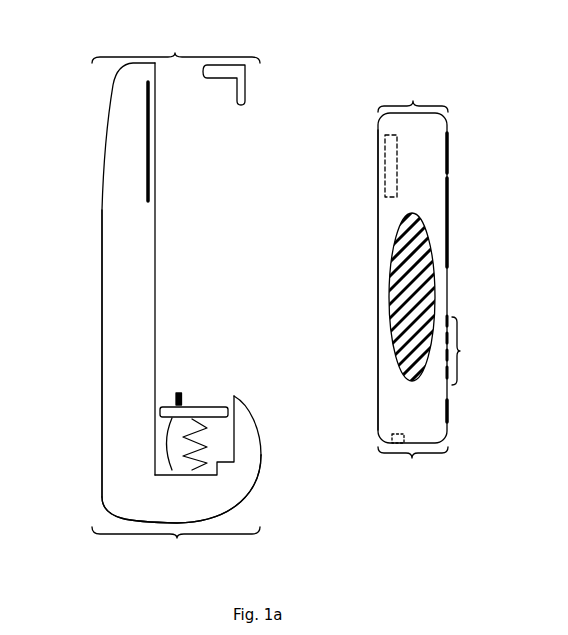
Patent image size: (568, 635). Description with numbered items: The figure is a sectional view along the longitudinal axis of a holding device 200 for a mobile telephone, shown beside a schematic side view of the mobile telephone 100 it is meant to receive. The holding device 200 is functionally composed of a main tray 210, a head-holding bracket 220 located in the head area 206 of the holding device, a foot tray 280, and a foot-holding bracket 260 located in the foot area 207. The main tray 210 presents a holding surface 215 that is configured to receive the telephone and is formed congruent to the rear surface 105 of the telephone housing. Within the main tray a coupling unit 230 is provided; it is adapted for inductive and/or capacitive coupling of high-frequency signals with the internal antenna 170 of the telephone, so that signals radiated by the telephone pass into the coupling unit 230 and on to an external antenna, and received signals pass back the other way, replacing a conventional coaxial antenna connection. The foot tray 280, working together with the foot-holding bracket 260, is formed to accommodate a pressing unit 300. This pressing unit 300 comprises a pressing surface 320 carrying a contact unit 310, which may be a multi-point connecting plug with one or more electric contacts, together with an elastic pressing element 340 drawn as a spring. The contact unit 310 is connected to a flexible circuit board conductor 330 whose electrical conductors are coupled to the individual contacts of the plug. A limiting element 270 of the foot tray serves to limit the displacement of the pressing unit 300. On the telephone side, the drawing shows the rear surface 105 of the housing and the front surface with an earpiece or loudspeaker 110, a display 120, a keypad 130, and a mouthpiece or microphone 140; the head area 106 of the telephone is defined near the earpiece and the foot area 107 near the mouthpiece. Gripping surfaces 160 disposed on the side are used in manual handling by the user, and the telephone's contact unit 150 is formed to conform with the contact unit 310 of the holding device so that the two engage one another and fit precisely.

The mobile telephone 100 is at (462, 100).
The rear surface of the housing 105 is at (376, 279).
The head area of the mobile telephone housing 106 is at (413, 94).
The foot area of the mobile telephone housing 107 is at (412, 463).
The earpiece or loudspeaker 110 is at (455, 152).
The display 120 is at (455, 243).
The keypad 130 is at (466, 353).
The mouthpiece or microphone 140 is at (454, 412).
The contact unit 150 is at (395, 432).
The gripping surface 160 is at (414, 300).
The antenna 170 is at (393, 167).
The holding device 200 is at (85, 88).
The head area of the holding device 206 is at (175, 43).
The foot area of the holding device 207 is at (175, 545).
The main tray 210 is at (118, 292).
The holding surface 215 is at (158, 292).
The head-holding bracket 220 is at (227, 82).
The coupling unit 230 is at (143, 142).
The foot-holding bracket 260 is at (245, 427).
The limiting element 270 is at (223, 468).
The foot tray 280 is at (192, 498).
The pressing unit 300 is at (196, 378).
The contact unit 310 is at (173, 397).
The pressing surface 320 is at (176, 412).
The flexible circuit board conductor 330 is at (164, 430).
The elastic pressing element 340 is at (184, 455).